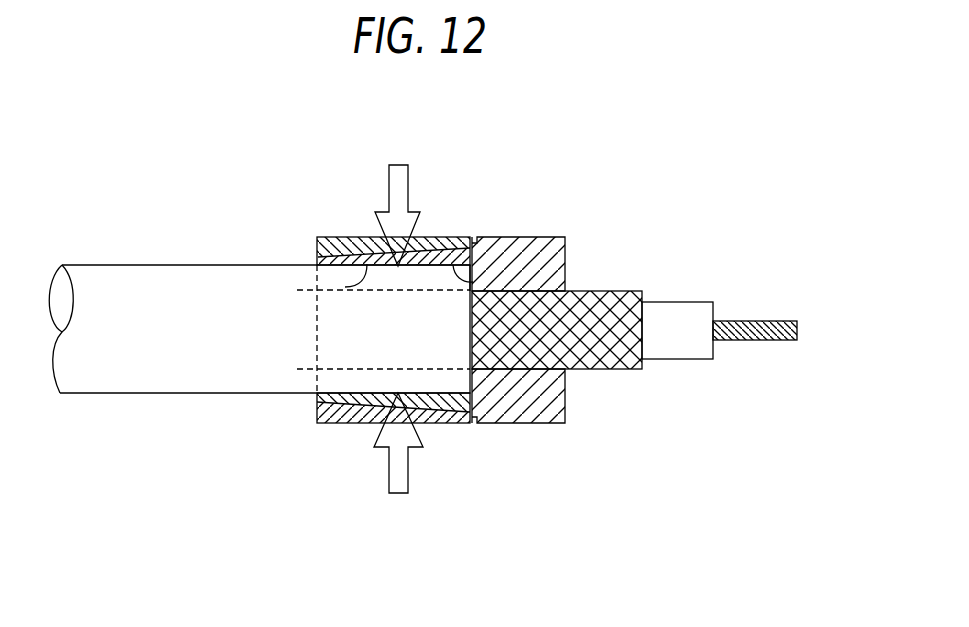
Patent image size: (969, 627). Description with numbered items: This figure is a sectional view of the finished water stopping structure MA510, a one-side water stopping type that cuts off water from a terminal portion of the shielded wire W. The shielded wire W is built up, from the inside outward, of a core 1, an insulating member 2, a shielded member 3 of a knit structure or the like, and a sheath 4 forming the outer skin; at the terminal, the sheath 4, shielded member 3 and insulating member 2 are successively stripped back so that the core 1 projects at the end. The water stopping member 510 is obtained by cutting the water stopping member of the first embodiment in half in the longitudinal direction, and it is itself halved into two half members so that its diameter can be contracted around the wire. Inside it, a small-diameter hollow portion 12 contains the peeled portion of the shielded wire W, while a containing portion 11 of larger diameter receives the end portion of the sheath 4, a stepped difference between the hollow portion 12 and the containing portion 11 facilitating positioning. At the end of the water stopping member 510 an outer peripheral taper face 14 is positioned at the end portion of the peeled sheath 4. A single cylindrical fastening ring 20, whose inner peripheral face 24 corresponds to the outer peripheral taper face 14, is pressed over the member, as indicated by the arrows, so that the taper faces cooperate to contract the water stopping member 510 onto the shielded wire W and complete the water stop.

The shielded wire W is at (198, 393).
The fastening ring 20 is at (350, 235).
The outer peripheral taper face 14 is at (447, 237).
The inner peripheral face 24 is at (345, 287).
The containing portion 11 is at (473, 282).
The sheath 4 is at (337, 383).
The water stopping member 510 is at (535, 235).
The shielded member 3 is at (602, 370).
The hollow portion 12 is at (550, 307).
The insulating member 2 is at (673, 360).
The core 1 is at (758, 341).
The water stopping structure MA510 is at (450, 510).